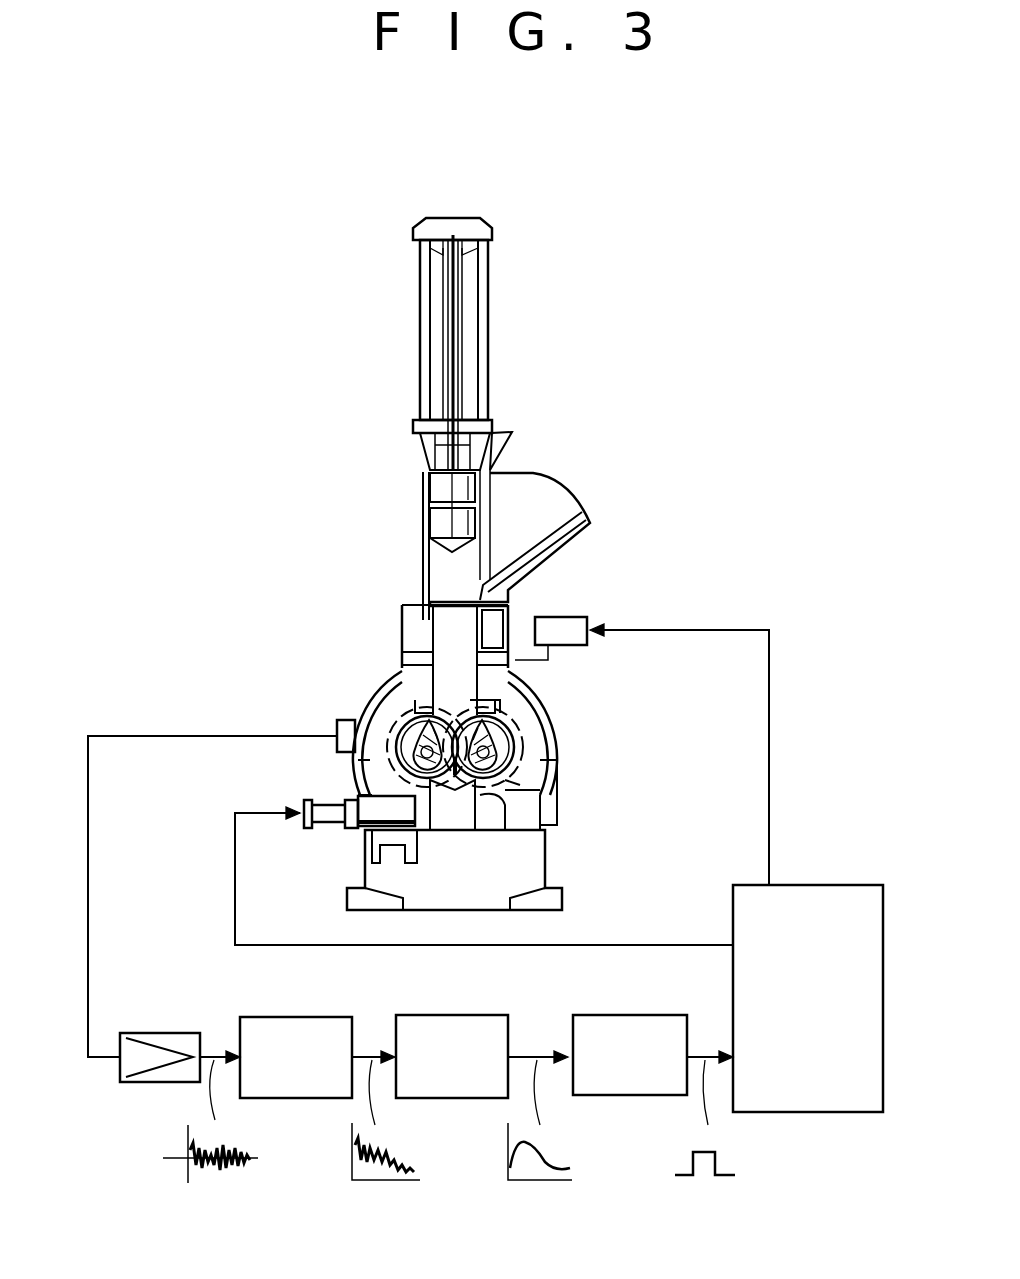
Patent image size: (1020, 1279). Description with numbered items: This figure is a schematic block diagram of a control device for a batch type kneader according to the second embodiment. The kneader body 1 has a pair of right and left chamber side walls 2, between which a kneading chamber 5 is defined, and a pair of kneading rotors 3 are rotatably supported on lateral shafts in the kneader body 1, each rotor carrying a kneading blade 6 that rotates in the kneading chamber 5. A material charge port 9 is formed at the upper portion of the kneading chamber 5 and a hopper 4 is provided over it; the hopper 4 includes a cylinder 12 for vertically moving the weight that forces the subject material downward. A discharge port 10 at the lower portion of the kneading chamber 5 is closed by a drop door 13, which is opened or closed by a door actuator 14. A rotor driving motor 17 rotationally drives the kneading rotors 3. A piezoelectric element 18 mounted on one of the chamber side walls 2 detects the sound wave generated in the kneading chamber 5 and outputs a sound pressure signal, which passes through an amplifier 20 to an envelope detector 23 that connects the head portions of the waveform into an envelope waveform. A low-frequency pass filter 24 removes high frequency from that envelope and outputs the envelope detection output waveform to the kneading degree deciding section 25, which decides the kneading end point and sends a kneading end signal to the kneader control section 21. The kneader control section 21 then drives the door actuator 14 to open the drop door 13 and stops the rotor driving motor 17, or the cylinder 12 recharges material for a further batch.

The kneader body 1 is at (454, 751).
The chamber side walls 2 is at (372, 690).
The kneading rotors 3 is at (400, 757).
The hopper 4 is at (574, 492).
The kneading chamber 5 is at (505, 792).
The kneading blade 6 is at (398, 718).
The material charge port 9 is at (520, 700).
The discharge port 10 is at (468, 795).
The cylinder 12 is at (490, 300).
The drop door 13 is at (452, 812).
The door actuator 14 is at (322, 832).
The rotor driving motor 17 is at (560, 617).
The piezoelectric element 18 is at (337, 728).
The amplifier 20 is at (140, 1083).
The kneader control section 21 is at (858, 1112).
The envelope detector 23 is at (300, 1098).
The low-frequency pass filter 24 is at (456, 1098).
The kneading degree deciding section 25 is at (629, 1095).